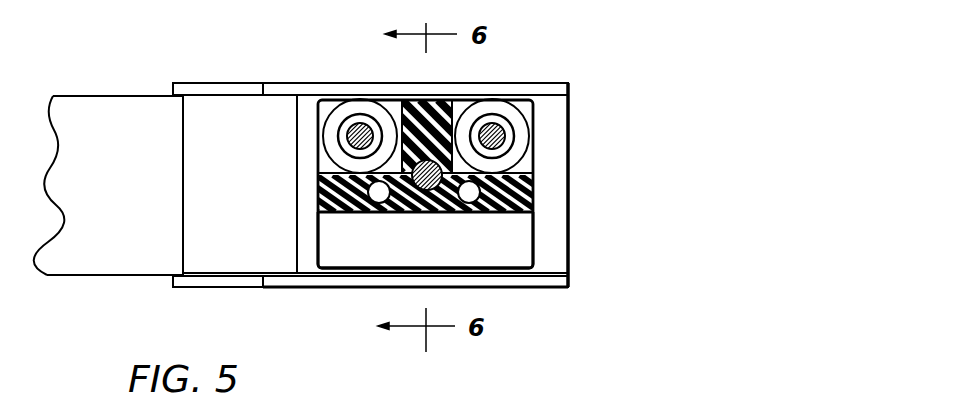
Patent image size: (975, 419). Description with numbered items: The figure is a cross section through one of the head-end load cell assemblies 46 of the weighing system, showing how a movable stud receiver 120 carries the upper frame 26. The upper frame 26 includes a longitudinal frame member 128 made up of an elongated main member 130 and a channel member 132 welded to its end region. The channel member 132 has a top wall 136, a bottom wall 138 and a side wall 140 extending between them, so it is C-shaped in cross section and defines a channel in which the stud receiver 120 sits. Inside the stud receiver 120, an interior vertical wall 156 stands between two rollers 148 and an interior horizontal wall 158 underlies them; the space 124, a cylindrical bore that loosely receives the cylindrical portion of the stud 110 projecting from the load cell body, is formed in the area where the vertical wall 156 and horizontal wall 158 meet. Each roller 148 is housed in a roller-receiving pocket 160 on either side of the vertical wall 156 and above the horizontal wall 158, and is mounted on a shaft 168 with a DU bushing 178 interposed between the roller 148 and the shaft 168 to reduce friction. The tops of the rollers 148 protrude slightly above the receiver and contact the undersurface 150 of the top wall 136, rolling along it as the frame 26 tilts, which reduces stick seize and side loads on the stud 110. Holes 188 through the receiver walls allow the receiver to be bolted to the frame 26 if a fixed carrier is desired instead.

The upper frame 26 is at (208, 296).
The load cell assembly 46 is at (548, 243).
The stud 110 is at (452, 208).
The movable stud receiver 120 is at (384, 251).
The space 124 is at (407, 208).
The longitudinal frame member 128 is at (125, 285).
The elongated main member 130 is at (123, 122).
The channel member 132 is at (238, 75).
The top wall 136 is at (543, 90).
The bottom wall 138 is at (548, 288).
The side wall 140 is at (558, 255).
The roller 148 is at (323, 140).
The undersurface 150 is at (553, 95).
The interior vertical wall 156 is at (425, 112).
The interior horizontal wall 158 is at (323, 213).
The roller-receiving pocket 160 is at (312, 161).
The shaft 168 is at (347, 113).
The DU bushing 178 is at (339, 130).
The hole 188 is at (372, 203).